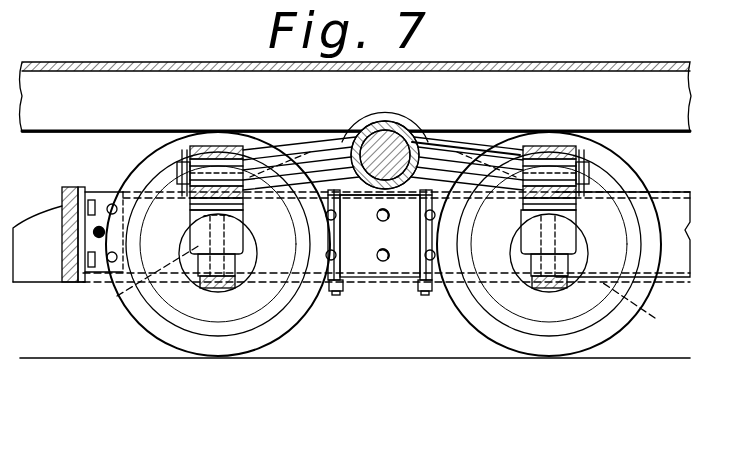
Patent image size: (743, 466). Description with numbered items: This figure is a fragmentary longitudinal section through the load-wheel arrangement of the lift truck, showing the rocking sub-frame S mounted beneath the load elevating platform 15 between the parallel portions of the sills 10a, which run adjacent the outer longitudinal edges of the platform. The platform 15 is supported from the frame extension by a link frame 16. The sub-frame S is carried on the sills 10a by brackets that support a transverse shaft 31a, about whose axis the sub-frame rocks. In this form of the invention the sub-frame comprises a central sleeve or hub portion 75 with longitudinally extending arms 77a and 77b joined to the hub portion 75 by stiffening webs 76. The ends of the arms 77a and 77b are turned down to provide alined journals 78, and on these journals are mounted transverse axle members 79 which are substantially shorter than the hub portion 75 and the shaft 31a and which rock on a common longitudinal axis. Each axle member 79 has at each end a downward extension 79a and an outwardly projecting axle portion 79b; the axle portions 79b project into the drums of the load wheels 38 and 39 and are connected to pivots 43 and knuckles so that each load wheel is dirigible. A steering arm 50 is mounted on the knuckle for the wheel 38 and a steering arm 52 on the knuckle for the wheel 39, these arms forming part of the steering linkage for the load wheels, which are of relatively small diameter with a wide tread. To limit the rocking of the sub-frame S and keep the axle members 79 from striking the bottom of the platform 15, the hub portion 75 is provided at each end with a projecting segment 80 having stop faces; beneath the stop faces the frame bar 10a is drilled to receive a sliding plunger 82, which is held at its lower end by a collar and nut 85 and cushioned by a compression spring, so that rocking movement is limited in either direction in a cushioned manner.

The load elevating platform 15 is at (156, 84).
The link frame 16 is at (54, 212).
The sills 10a is at (673, 258).
The load wheel 38 is at (296, 314).
The load wheel 39 is at (618, 330).
The pivots 43 is at (203, 272).
The steering arm 50 is at (226, 289).
The steering arm 52 is at (565, 286).
The sleeve or hub portion 75 is at (388, 124).
The stiffening webs 76 is at (323, 157).
The longitudinally extending arm 77a is at (527, 160).
The longitudinally extending arm 77b is at (285, 160).
The journals 78 is at (196, 158).
The transverse axle members 79 is at (222, 150).
The downward extension 79a is at (194, 212).
The axle portion 79b is at (381, 290).
The projecting segment 80 is at (407, 128).
The sliding plunger 82 is at (422, 239).
The collar and nut 85 is at (418, 293).
The transverse shaft 31a is at (455, 122).
The rocking sub-frame S is at (447, 146).